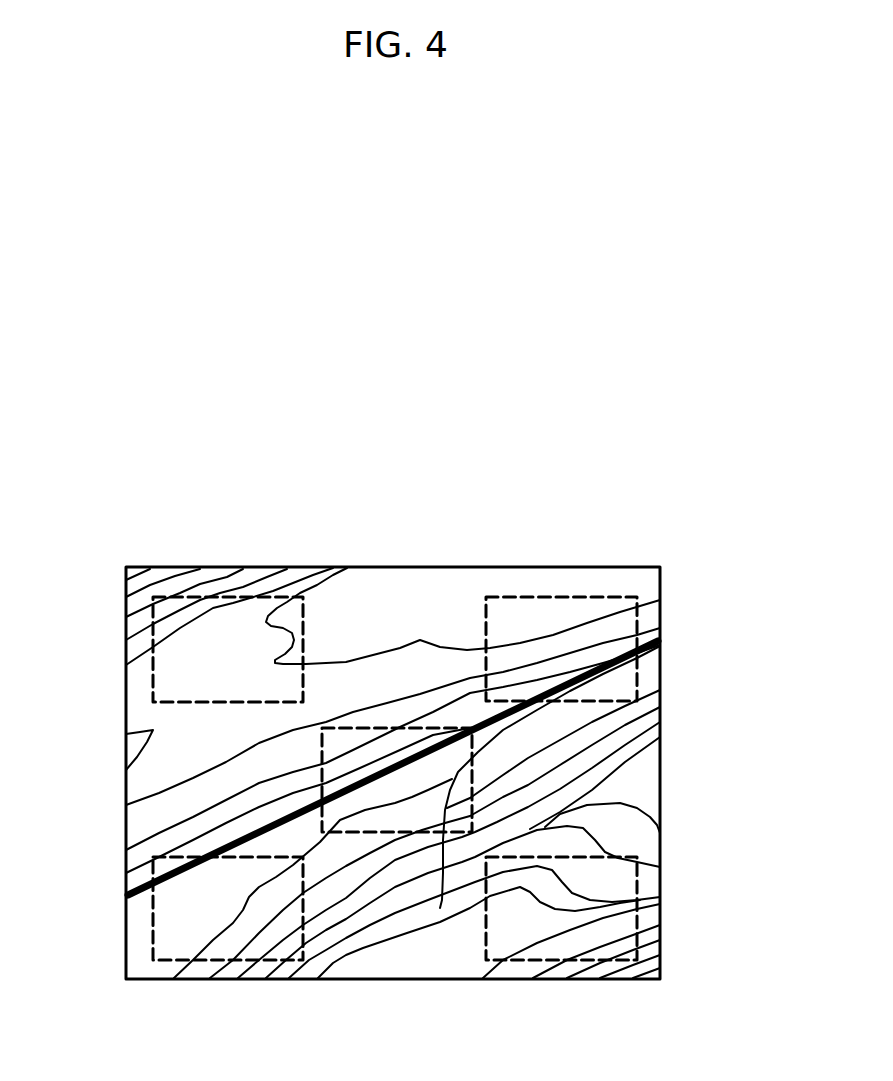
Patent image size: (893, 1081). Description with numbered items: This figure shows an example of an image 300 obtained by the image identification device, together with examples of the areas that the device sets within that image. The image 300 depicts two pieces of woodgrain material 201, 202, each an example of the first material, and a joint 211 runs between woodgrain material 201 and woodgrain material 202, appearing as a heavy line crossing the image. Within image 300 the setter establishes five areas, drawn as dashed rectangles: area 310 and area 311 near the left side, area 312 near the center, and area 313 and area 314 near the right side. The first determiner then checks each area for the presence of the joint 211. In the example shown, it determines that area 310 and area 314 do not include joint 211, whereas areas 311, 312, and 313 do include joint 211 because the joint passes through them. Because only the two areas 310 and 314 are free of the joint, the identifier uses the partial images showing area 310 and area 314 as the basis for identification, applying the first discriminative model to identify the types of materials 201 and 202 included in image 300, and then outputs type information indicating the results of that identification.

The woodgrain material 201 is at (450, 590).
The woodgrain material 202 is at (634, 786).
The joint 211 is at (649, 647).
The image 300 is at (639, 567).
The area 310 is at (151, 681).
The area 311 is at (151, 899).
The area 312 is at (400, 833).
The area 313 is at (642, 680).
The area 314 is at (640, 905).